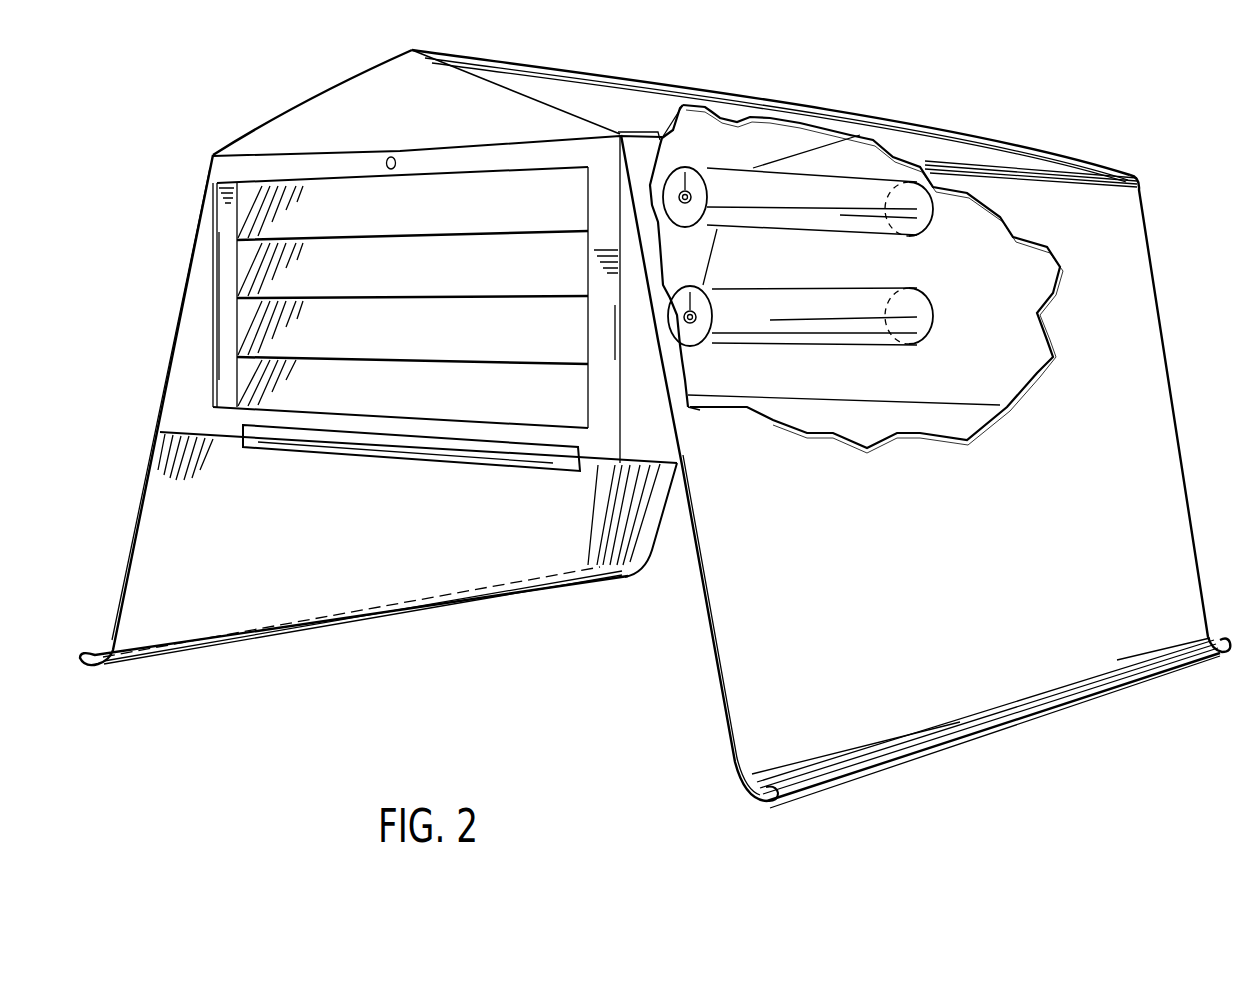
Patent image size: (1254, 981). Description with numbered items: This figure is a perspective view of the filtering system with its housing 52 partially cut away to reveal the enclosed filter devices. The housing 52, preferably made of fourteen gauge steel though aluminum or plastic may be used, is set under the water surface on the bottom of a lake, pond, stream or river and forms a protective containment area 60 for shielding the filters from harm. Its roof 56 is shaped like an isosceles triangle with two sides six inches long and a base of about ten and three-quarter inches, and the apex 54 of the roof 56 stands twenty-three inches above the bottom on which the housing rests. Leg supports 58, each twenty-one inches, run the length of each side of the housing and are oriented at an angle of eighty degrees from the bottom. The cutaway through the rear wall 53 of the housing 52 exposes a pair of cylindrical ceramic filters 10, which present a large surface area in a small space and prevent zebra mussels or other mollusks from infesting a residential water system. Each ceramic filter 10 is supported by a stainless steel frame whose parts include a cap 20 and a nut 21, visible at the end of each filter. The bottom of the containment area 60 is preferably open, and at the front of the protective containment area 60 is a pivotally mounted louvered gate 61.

The ceramic filter 10 is at (827, 200).
The cap 20 is at (688, 142).
The nut 21 is at (700, 199).
The housing 52 is at (1117, 536).
The rear wall 53 is at (1003, 310).
The apex 54 is at (553, 70).
The roof 56 is at (617, 95).
The leg supports 58 is at (347, 583).
The protective containment area 60 is at (1033, 380).
The louvered gate 61 is at (220, 313).